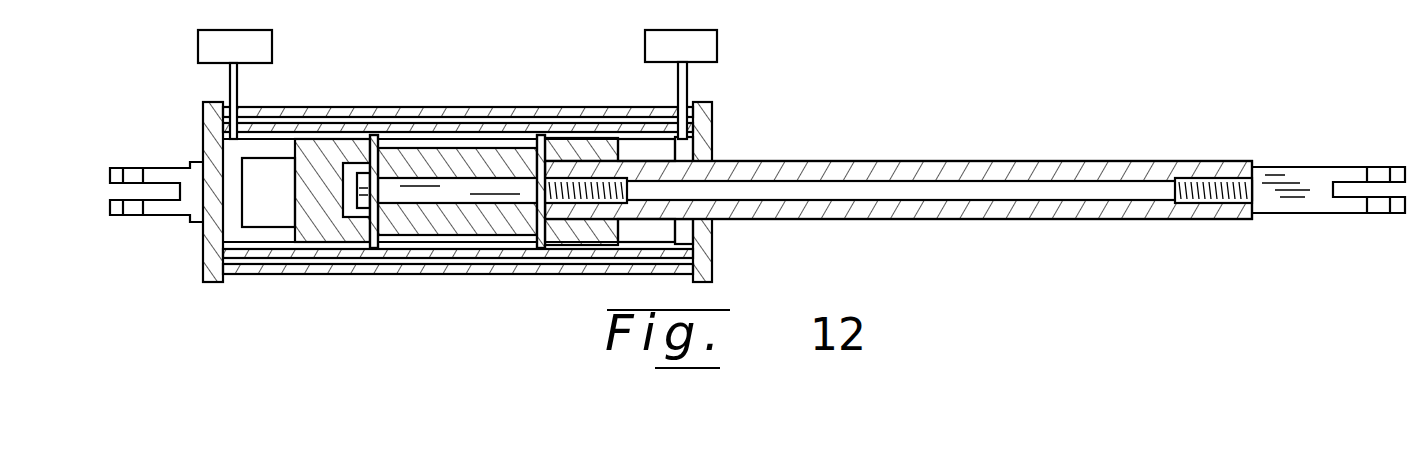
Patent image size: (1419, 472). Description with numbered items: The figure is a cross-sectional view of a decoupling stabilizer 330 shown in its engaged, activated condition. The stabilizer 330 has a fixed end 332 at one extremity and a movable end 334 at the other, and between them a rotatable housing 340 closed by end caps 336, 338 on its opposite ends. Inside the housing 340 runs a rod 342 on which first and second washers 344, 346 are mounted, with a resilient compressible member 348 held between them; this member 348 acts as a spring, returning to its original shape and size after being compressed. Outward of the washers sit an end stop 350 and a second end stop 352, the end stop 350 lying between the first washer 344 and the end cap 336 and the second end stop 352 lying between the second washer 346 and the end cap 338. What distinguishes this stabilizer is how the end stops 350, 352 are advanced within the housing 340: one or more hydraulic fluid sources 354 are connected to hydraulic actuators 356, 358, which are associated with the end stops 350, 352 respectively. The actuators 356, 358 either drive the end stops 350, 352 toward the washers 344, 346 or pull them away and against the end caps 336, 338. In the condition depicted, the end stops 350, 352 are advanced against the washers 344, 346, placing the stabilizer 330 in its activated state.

The decoupling stabilizer 330 is at (856, 110).
The fixed end 332 is at (167, 166).
The movable end 334 is at (1295, 178).
The end cap 336 is at (212, 243).
The end cap 338 is at (714, 135).
The rotatable housing 340 is at (316, 272).
The rod 342 is at (470, 192).
The first washer 344 is at (374, 249).
The second washer 346 is at (541, 249).
The resilient compressible member 348 is at (440, 160).
The end stop 350 is at (318, 150).
The second end stop 352 is at (572, 148).
The hydraulic fluid source 354 is at (210, 43).
The hydraulic actuator 356 is at (262, 232).
The hydraulic actuator 358 is at (638, 150).